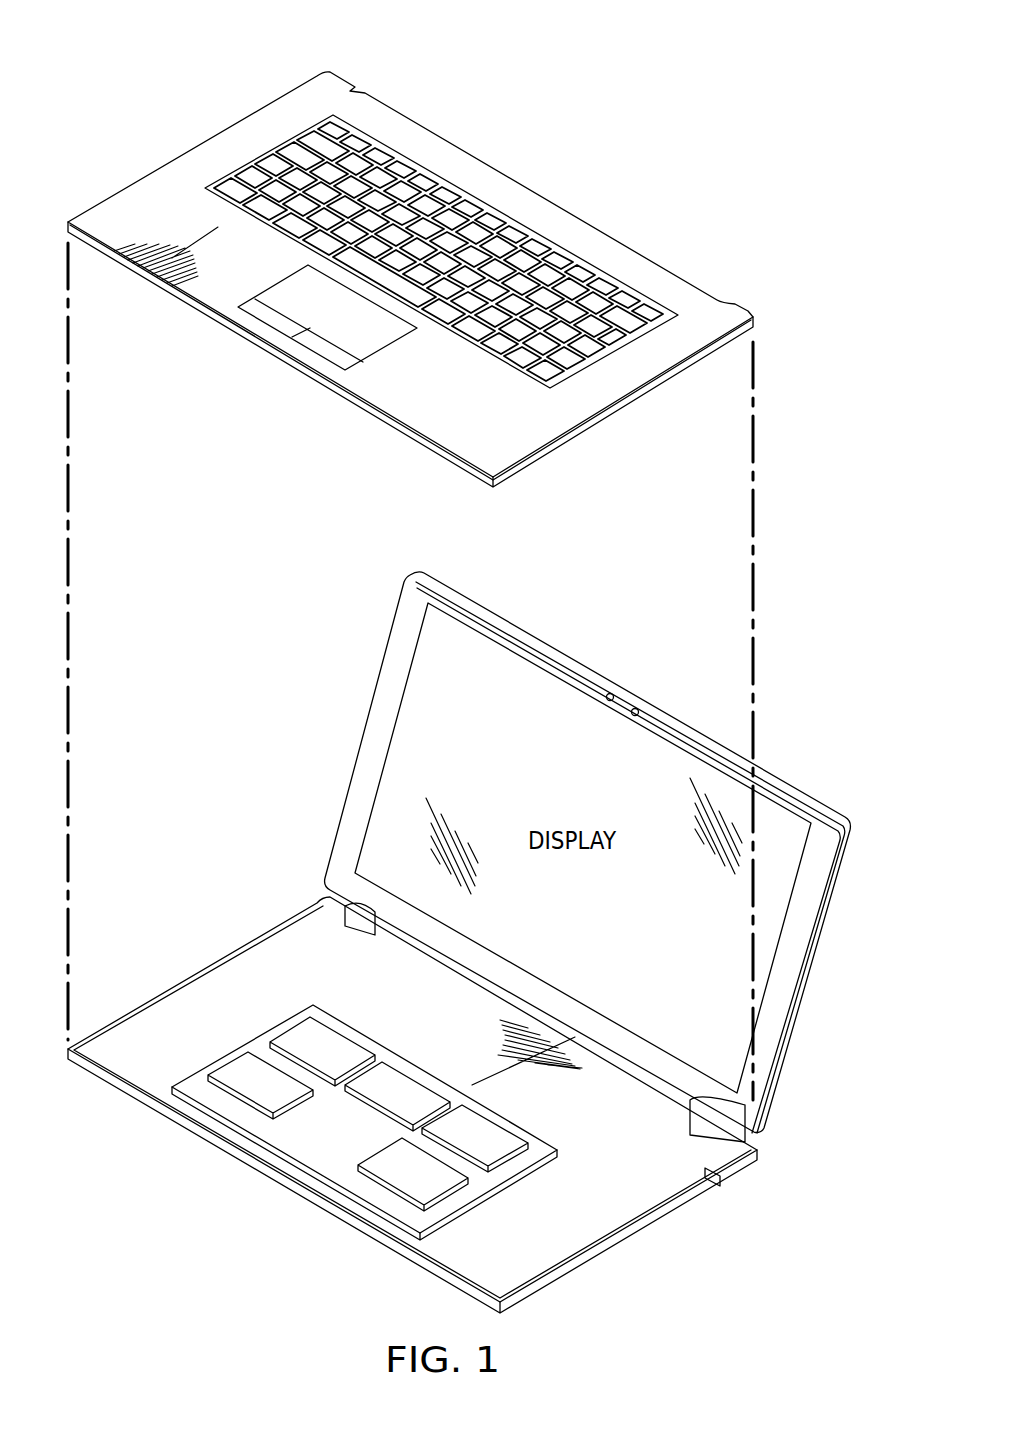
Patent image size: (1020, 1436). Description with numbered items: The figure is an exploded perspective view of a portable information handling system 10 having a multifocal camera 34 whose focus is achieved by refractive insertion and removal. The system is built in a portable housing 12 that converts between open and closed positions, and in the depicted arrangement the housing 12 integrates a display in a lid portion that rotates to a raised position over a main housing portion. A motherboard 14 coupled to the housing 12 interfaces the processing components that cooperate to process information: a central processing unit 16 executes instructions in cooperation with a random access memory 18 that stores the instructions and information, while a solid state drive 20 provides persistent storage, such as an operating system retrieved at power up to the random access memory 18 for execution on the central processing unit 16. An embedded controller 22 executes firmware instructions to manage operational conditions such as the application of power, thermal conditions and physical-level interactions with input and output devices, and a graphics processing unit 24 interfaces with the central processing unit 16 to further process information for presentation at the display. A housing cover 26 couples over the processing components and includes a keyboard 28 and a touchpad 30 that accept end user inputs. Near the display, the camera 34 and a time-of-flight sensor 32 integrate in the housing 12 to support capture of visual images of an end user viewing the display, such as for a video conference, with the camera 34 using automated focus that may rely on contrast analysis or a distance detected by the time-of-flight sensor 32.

The portable information handling system 10 is at (761, 148).
The housing 12 is at (683, 1206).
The motherboard 14 is at (312, 1143).
The central processing unit 16 is at (290, 1037).
The random access memory 18 is at (226, 1074).
The solid state drive 20 is at (447, 1183).
The embedded controller 22 is at (510, 1152).
The graphics processing unit 24 is at (390, 1070).
The housing cover 26 is at (200, 158).
The keyboard 28 is at (482, 200).
The touchpad 30 is at (350, 340).
The time-of-flight sensor 32 is at (640, 708).
The camera 34 is at (606, 693).